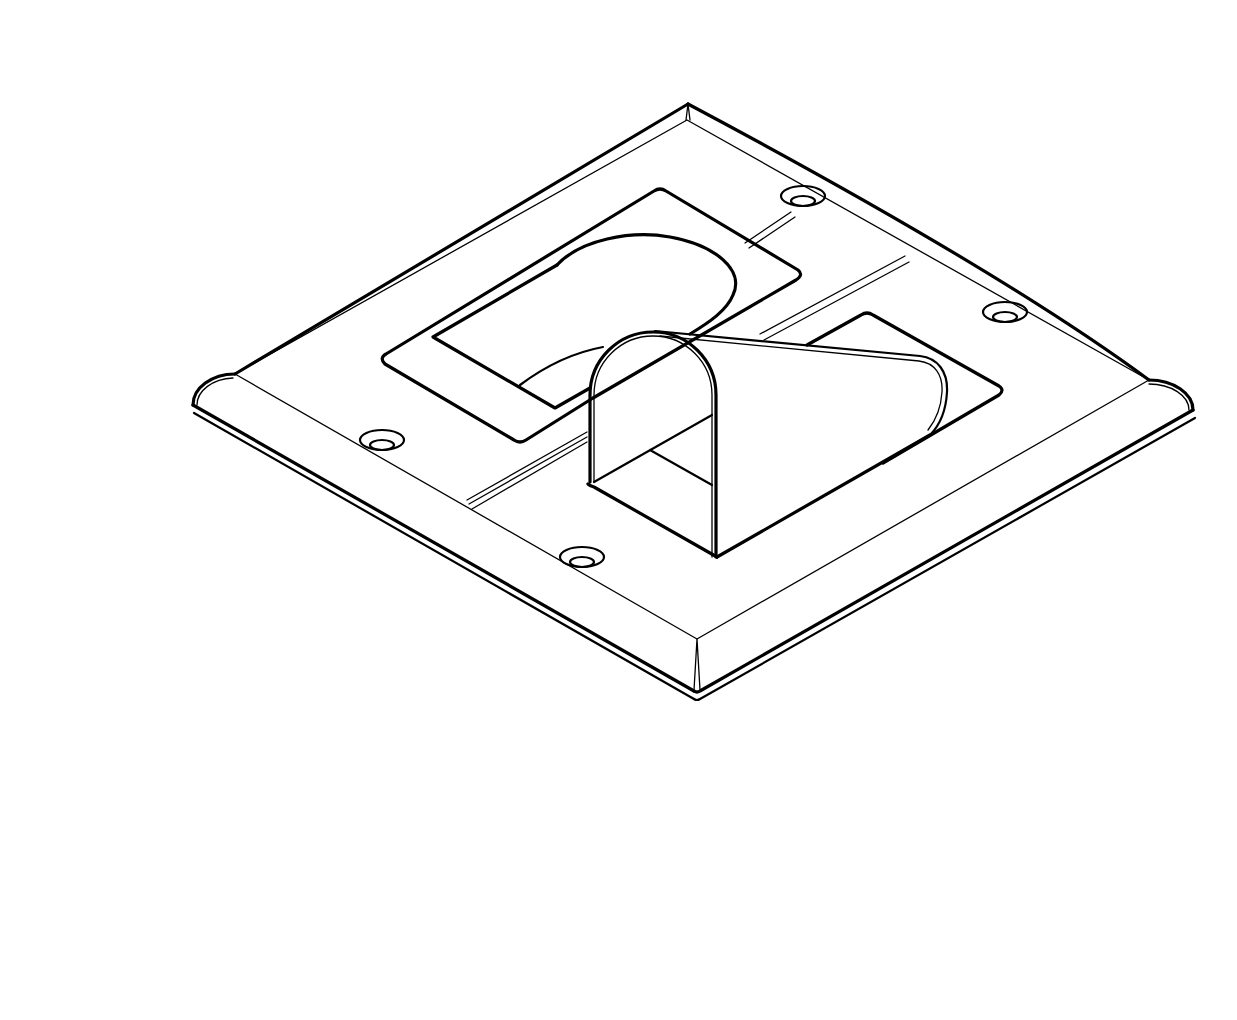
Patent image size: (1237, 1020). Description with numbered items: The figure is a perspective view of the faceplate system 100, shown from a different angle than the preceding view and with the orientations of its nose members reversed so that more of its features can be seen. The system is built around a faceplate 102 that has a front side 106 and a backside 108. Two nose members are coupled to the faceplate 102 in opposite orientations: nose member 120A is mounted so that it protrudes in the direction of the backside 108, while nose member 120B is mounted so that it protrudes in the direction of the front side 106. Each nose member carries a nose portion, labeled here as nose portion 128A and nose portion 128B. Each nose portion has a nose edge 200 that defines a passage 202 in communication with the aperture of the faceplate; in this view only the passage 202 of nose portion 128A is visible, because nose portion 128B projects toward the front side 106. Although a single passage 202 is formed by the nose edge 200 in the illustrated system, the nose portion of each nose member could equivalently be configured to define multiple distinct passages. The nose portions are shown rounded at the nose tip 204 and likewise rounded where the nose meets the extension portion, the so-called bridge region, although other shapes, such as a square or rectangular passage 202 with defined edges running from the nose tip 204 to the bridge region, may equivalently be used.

The faceplate system 100 is at (1129, 172).
The faceplate 102 is at (920, 503).
The front side 106 is at (667, 600).
The backside 108 is at (1136, 357).
The nose member 120A is at (648, 218).
The nose member 120B is at (887, 367).
The nose portion 128A is at (597, 362).
The nose portion 128B is at (845, 454).
The nose edge 200 is at (587, 468).
The passage 202 is at (646, 481).
The nose tip 204 is at (713, 364).